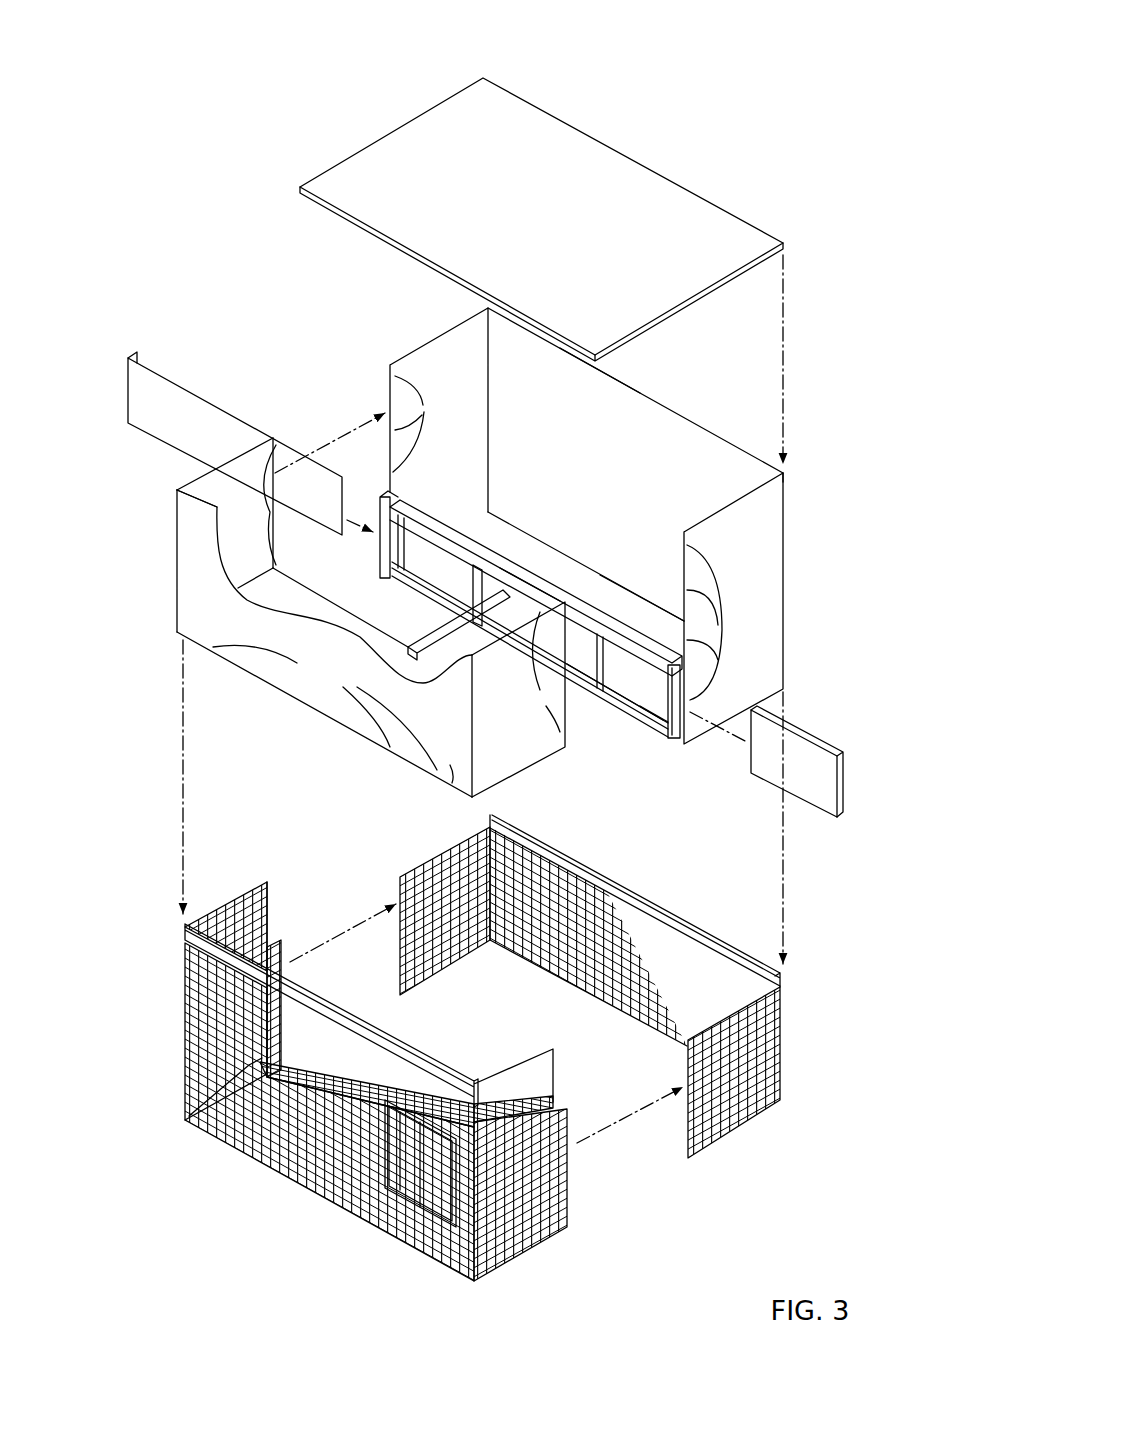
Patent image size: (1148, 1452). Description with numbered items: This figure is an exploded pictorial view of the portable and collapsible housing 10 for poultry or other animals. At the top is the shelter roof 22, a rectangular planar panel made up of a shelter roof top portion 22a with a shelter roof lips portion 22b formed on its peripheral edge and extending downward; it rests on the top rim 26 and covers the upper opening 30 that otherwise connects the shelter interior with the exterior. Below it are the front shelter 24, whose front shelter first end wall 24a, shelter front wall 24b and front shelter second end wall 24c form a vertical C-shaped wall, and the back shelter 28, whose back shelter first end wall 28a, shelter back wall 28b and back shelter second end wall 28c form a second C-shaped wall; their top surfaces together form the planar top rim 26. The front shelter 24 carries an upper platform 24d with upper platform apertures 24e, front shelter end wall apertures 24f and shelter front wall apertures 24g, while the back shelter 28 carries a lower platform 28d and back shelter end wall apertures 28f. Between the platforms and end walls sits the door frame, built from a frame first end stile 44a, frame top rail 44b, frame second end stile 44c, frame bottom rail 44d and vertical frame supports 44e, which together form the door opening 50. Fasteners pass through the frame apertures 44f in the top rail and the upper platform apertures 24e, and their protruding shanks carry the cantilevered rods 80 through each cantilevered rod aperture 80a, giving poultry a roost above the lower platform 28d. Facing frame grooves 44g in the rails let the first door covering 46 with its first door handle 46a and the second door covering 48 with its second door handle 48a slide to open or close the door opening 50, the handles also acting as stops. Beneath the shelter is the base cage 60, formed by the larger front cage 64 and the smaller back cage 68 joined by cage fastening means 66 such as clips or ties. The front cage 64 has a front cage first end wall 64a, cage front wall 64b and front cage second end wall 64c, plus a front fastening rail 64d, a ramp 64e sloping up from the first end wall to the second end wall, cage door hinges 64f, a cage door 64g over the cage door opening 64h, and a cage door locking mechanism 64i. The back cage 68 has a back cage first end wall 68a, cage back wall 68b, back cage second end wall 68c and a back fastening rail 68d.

The housing 10 is at (237, 70).
The shelter roof 22 is at (541, 217).
The shelter roof top portion 22a is at (508, 112).
The shelter roof lips portion 22b is at (352, 223).
The front shelter 24 is at (333, 630).
The front shelter first end wall 24a is at (207, 488).
The shelter front wall 24b is at (458, 781).
The front shelter second end wall 24c is at (513, 763).
The upper platform 24d is at (263, 578).
The upper platform apertures 24e is at (337, 604).
The front shelter end wall apertures 24f is at (273, 500).
The shelter front wall apertures 24g is at (333, 713).
The top rim 26 is at (787, 478).
The back shelter 28 is at (606, 526).
The back shelter first end wall 28a is at (450, 347).
The shelter back wall 28b is at (686, 429).
The back shelter second end wall 28c is at (762, 675).
The lower platform 28d is at (642, 610).
The back shelter end wall apertures 28f is at (393, 425).
The upper opening 30 is at (583, 452).
The frame first end stile 44a is at (372, 533).
The frame top rail 44b is at (395, 505).
The frame second end stile 44c is at (683, 738).
The frame bottom rail 44d is at (612, 690).
The frame supports 44e is at (576, 669).
The frame apertures 44f is at (537, 582).
The frame grooves 44g is at (662, 724).
The first door covering 46 is at (830, 759).
The first door handle 46a is at (848, 784).
The second door covering 48 is at (235, 433).
The second door handle 48a is at (140, 359).
The door opening 50 is at (424, 513).
The base cage 60 is at (848, 910).
The front cage 64 is at (359, 1095).
The front cage first end wall 64a is at (238, 1088).
The cage front wall 64b is at (242, 1152).
The front cage second end wall 64c is at (514, 1259).
The front fastening rail 64d is at (185, 928).
The ramp 64e is at (374, 1074).
The cage door hinges 64f is at (360, 1190).
The cage door 64g is at (416, 1190).
The cage door opening 64h is at (422, 1242).
The cage door locking mechanism 64i is at (466, 1138).
The cage fastening means 66 is at (258, 1066).
The back cage 68 is at (631, 986).
The back cage first end wall 68a is at (445, 978).
The cage back wall 68b is at (540, 970).
The back cage second end wall 68c is at (760, 1120).
The back fastening rail 68d is at (698, 935).
The cantilevered rod 80 is at (470, 595).
The cantilevered rod aperture 80a is at (412, 644).